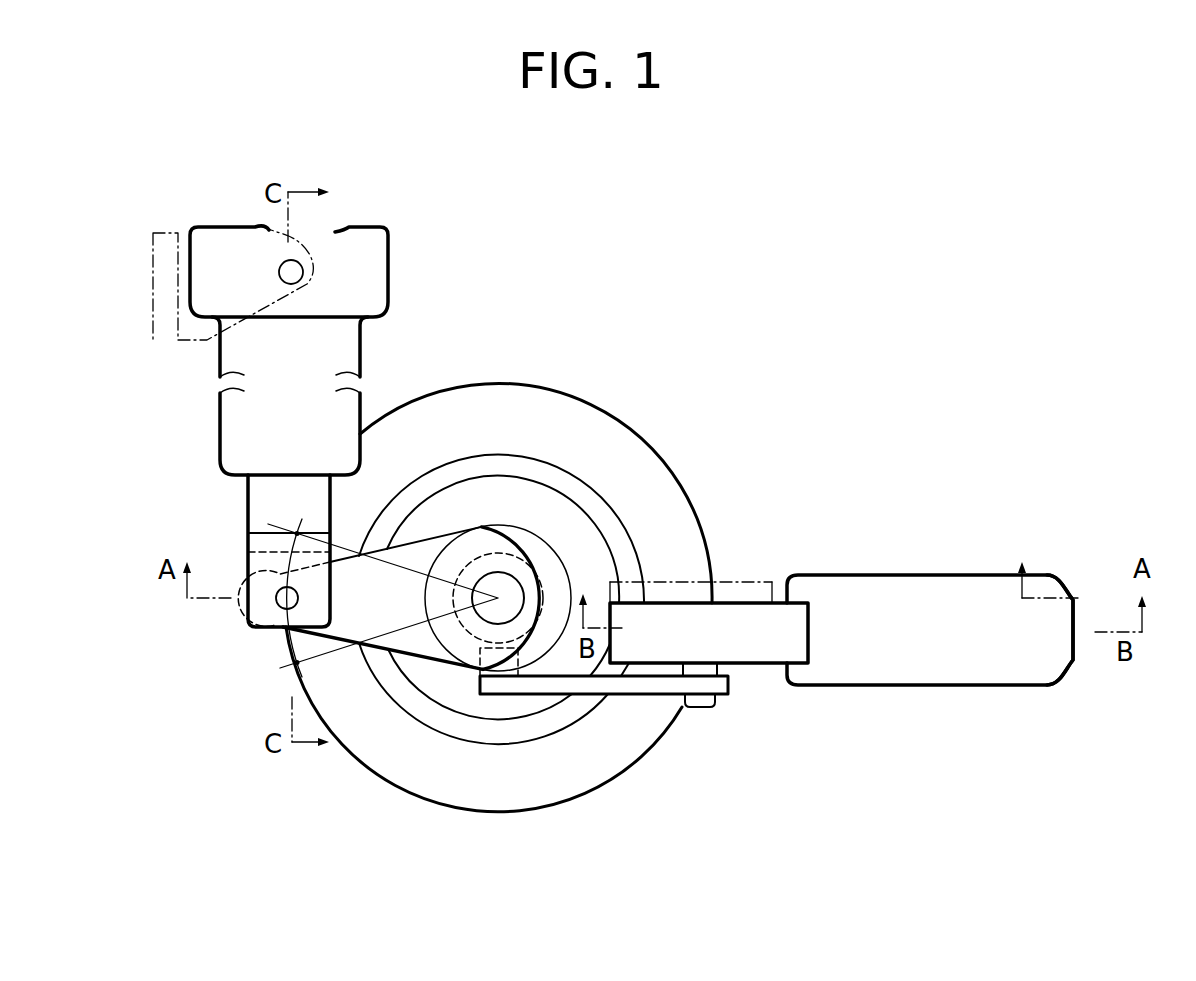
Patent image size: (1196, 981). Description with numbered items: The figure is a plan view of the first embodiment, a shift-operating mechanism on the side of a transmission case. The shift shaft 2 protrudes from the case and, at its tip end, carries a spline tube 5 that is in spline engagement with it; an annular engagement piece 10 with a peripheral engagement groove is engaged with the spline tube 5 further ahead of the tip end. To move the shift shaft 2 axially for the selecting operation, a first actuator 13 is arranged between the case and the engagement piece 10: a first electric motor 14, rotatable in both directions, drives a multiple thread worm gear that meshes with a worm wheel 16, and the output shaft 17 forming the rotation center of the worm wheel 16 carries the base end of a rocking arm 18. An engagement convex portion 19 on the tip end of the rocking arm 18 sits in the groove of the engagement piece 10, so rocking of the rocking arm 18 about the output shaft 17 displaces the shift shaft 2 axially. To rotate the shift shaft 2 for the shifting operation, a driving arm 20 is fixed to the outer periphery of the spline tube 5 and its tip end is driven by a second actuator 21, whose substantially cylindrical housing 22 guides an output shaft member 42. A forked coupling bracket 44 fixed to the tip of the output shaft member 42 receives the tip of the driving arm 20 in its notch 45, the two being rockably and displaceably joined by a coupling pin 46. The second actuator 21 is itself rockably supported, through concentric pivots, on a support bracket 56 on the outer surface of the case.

The shift shaft 2 is at (516, 592).
The spline tube 5 is at (437, 545).
The engagement piece 10 is at (517, 545).
The first actuator 13 is at (870, 573).
The first electric motor 14 is at (942, 674).
The worm wheel 16 is at (760, 664).
The output shaft 17 is at (698, 708).
The rocking arm 18 is at (640, 697).
The engagement convex portion 19 is at (478, 667).
The driving arm 20 is at (430, 656).
The second actuator 21 is at (390, 268).
The housing 22 is at (220, 418).
The output shaft member 42 is at (248, 495).
The coupling bracket 44 is at (256, 568).
The notch 45 is at (270, 560).
The coupling pin 46 is at (282, 602).
The support bracket 56 is at (150, 274).